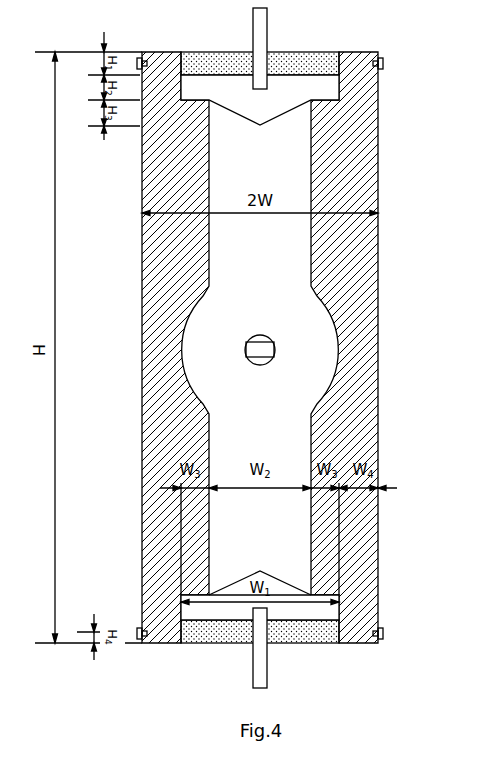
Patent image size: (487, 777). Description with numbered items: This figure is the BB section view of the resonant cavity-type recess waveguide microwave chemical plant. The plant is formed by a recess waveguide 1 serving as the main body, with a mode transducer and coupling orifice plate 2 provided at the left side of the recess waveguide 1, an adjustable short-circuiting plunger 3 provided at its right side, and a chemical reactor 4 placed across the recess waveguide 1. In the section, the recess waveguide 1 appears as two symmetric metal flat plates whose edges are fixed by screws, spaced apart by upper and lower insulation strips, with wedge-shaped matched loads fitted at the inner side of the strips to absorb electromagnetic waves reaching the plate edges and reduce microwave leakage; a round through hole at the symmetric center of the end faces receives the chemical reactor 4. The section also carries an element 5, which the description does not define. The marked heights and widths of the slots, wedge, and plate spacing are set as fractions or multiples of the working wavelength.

The recess waveguide 1 is at (381, 638).
The mode transducer and coupling orifice plate 2 is at (353, 420).
The adjustable short-circuiting plunger 3 is at (325, 87).
The chemical reactor 4 is at (328, 63).
The housing wall 5 is at (172, 268).